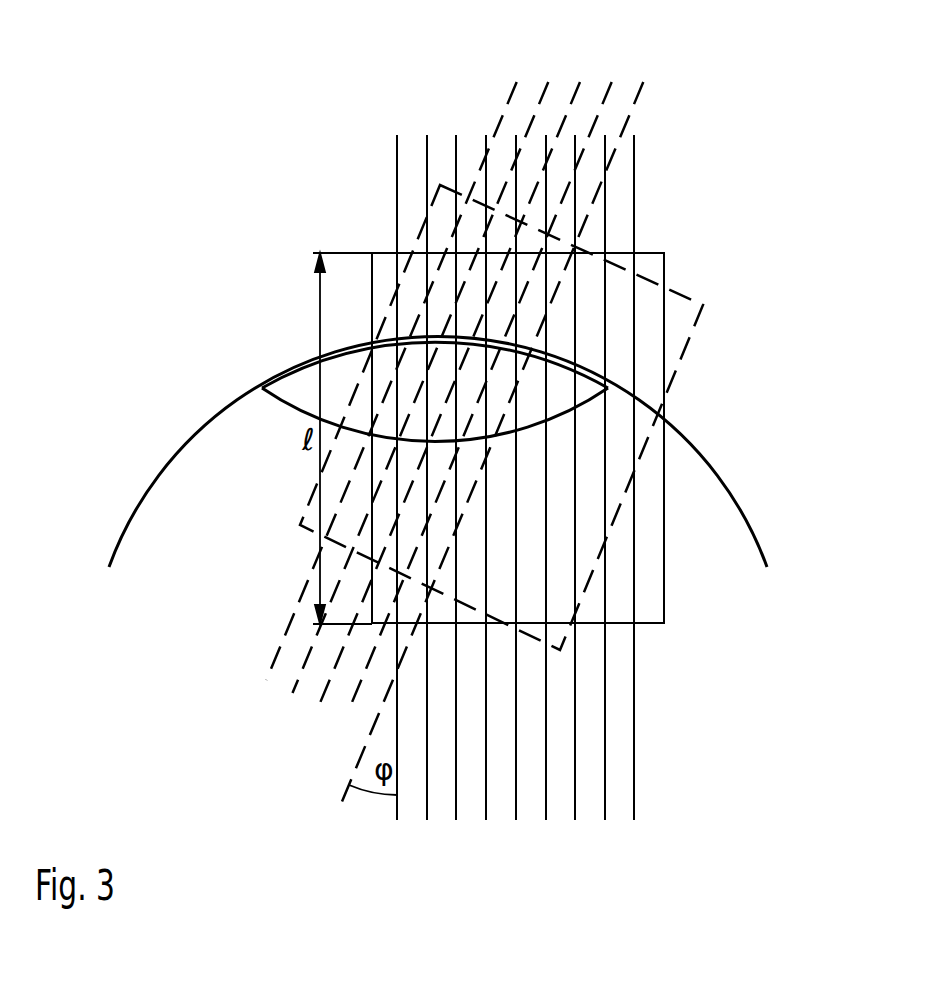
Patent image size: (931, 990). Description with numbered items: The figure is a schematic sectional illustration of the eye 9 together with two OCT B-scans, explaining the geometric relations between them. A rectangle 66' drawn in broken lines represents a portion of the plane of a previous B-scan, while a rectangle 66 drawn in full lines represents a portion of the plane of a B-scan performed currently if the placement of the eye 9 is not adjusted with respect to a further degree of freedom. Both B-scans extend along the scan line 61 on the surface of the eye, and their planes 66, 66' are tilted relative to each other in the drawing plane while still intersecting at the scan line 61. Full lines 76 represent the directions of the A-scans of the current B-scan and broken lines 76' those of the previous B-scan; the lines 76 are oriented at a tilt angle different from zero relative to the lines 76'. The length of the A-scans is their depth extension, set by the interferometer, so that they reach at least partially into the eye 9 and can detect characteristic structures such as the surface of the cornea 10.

The eye 9 is at (757, 525).
The cornea 10 is at (300, 364).
The scan line 61 is at (627, 393).
The rectangle representing plane of current B-scan 66 is at (552, 438).
The rectangle representing plane of previous B-scan 66' is at (516, 417).
The lines representing A-scan directions of current B-scan 76 is at (511, 442).
The lines representing A-scan directions of previous B-scan 76' is at (454, 406).